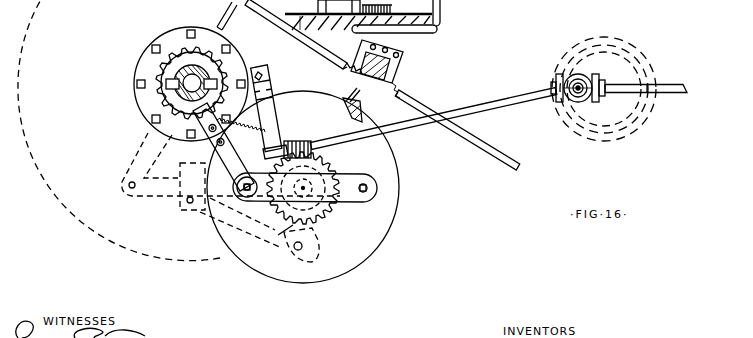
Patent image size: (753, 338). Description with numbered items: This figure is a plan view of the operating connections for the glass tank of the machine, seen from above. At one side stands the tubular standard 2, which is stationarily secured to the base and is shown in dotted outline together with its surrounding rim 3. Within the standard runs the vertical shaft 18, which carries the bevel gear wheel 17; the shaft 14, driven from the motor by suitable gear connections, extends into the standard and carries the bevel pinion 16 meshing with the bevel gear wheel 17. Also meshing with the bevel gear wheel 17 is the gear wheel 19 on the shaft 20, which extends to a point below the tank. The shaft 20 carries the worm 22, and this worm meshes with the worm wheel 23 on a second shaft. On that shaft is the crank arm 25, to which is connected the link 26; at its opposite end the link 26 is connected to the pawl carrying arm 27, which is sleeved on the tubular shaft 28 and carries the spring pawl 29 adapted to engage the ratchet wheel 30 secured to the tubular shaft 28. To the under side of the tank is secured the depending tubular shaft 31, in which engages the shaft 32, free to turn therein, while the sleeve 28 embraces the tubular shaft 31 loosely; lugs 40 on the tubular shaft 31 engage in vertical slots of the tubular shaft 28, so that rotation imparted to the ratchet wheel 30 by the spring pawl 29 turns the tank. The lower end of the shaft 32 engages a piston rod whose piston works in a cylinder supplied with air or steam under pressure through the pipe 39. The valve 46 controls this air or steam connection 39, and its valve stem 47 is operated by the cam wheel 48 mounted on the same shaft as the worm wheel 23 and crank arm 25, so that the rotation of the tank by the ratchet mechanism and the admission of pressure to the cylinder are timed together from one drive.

The tubular standard 2 is at (613, 50).
The dashed wheel rim outline 3 is at (635, 50).
The shaft 14 is at (662, 91).
The bevel pinion 16 is at (604, 82).
The bevel gear wheel 17 is at (585, 99).
The vertical shaft 18 is at (578, 85).
The gear wheel 19 is at (565, 101).
The shaft 20 is at (478, 106).
The worm 22 is at (297, 143).
The worm wheel 23 is at (348, 157).
The crank arm 25 is at (375, 197).
The link 26 is at (343, 190).
The pawl carrying arm 27 is at (232, 165).
The tubular shaft 28 is at (205, 78).
The spring pawl 29 is at (195, 134).
The ratchet wheel 30 is at (163, 108).
The depending tubular shaft 31 is at (180, 71).
The shaft 32 is at (173, 90).
The pipe 39 is at (303, 41).
The lugs 40 is at (213, 83).
The valve 46 is at (392, 68).
The valve stem 47 is at (358, 100).
The cam wheel 48 is at (390, 182).